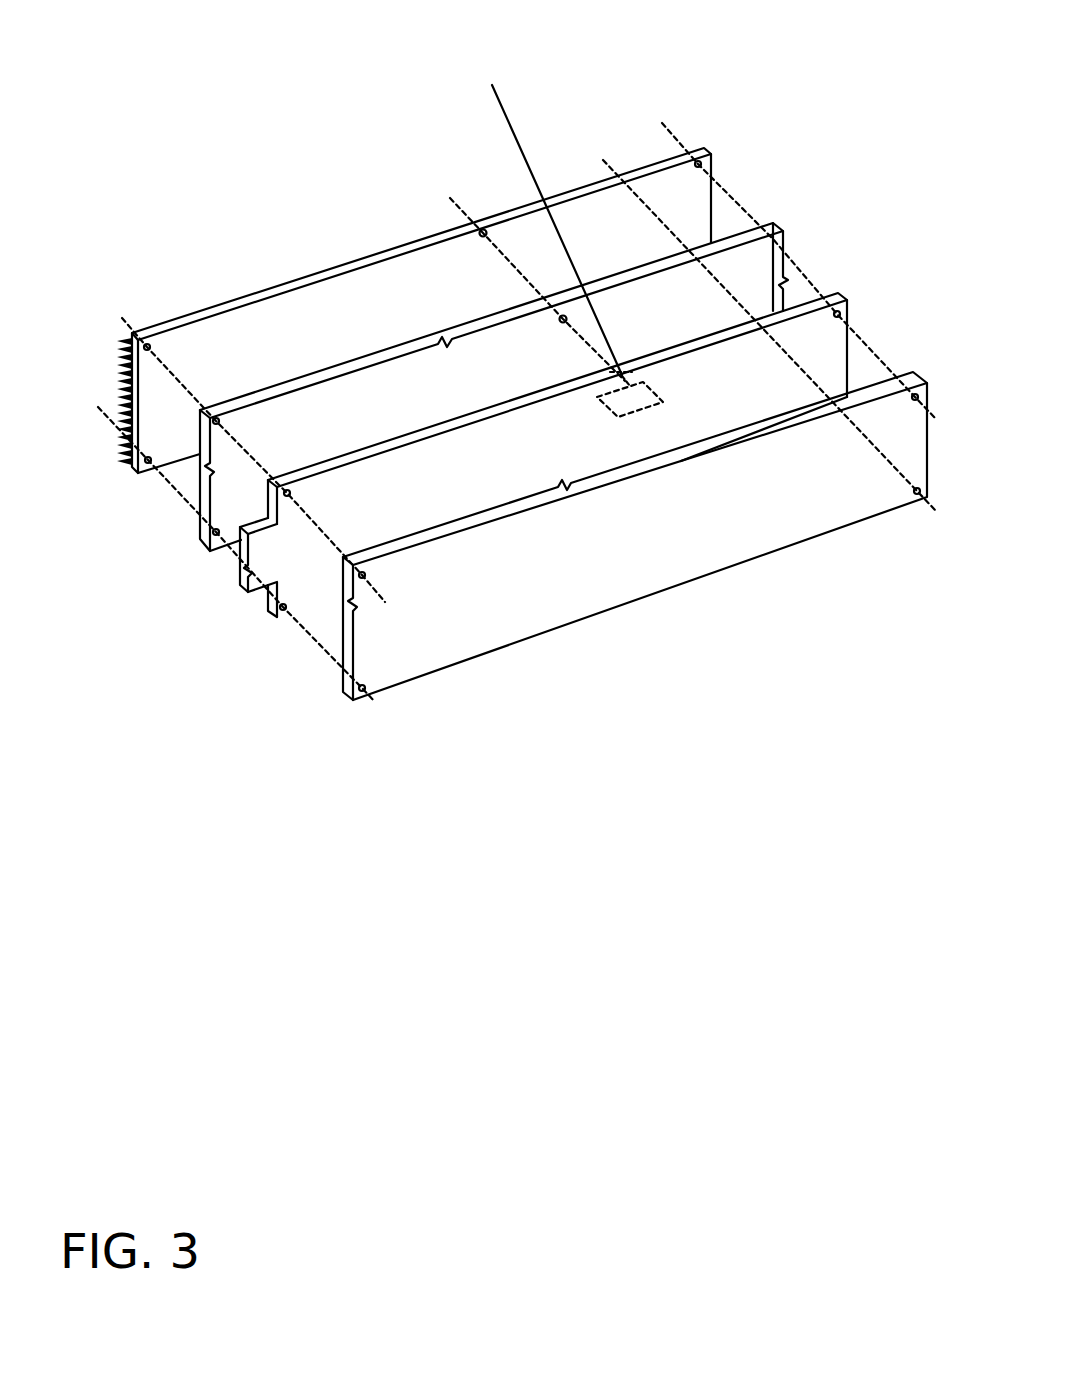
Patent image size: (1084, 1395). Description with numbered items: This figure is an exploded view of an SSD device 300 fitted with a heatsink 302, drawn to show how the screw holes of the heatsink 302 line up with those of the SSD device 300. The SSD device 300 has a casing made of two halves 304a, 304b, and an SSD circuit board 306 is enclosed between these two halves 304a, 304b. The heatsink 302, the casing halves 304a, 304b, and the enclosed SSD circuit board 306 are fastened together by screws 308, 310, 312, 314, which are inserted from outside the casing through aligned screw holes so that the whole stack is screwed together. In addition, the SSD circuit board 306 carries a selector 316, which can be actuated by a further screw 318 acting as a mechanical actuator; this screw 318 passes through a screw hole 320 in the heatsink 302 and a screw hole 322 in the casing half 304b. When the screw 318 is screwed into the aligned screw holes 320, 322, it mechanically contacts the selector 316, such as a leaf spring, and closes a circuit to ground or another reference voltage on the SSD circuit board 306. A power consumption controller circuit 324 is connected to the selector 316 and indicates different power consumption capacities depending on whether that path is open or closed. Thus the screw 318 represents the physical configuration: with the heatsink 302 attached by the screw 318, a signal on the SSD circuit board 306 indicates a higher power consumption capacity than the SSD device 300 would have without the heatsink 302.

The SSD device 300 is at (190, 745).
The heatsink 302 is at (257, 325).
The SSD casing half 304a is at (642, 542).
The SSD casing half 304b is at (227, 470).
The SSD circuit board 306 is at (283, 558).
The screw 308 is at (93, 398).
The screw 310 is at (112, 312).
The screw 312 is at (593, 147).
The screw 314 is at (660, 125).
The selector 316 is at (492, 85).
The screw 318 is at (448, 196).
The screw hole 320 is at (475, 231).
The screw hole 322 is at (558, 318).
The power consumption controller circuit 324 is at (652, 410).